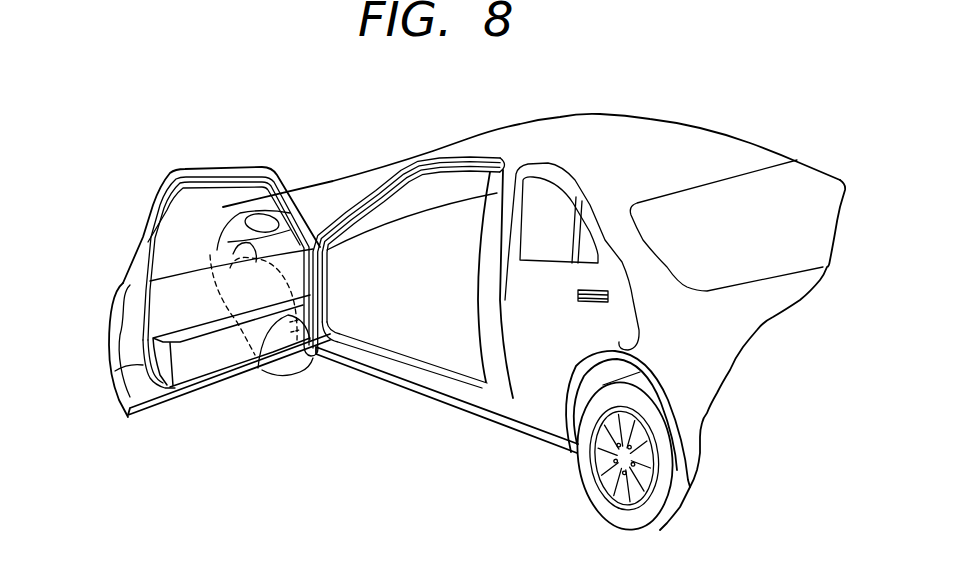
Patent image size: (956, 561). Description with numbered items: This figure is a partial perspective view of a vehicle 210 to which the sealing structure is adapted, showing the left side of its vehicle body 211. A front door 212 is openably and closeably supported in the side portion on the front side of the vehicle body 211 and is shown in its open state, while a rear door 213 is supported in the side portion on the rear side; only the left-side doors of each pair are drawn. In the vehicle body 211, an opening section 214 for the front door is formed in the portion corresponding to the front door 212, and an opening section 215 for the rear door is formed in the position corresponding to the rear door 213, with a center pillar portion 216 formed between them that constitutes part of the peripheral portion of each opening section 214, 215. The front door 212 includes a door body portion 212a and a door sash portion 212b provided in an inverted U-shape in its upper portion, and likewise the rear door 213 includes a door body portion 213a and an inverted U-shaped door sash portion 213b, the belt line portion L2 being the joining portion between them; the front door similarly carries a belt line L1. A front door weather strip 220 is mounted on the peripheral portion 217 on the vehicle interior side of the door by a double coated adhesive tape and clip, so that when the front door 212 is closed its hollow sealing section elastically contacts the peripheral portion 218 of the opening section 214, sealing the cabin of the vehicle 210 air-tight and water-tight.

The vehicle 210 is at (534, 300).
The vehicle body 211 is at (647, 118).
The front door 212 is at (186, 273).
The door body portion 212a is at (110, 290).
The door sash portion 212b is at (237, 173).
The rear door 213 is at (540, 417).
The door body portion 213a is at (515, 395).
The door sash portion 213b is at (570, 200).
The opening section for the front door 214 is at (470, 173).
The opening section for the rear door 215 is at (628, 343).
The center pillar portion 216 is at (487, 300).
The peripheral portion 217 is at (190, 394).
The peripheral portion of the opening section 218 is at (383, 197).
The front door weather strip 220 is at (115, 378).
The front door length L1 is at (231, 254).
The belt line portion L2 is at (547, 257).